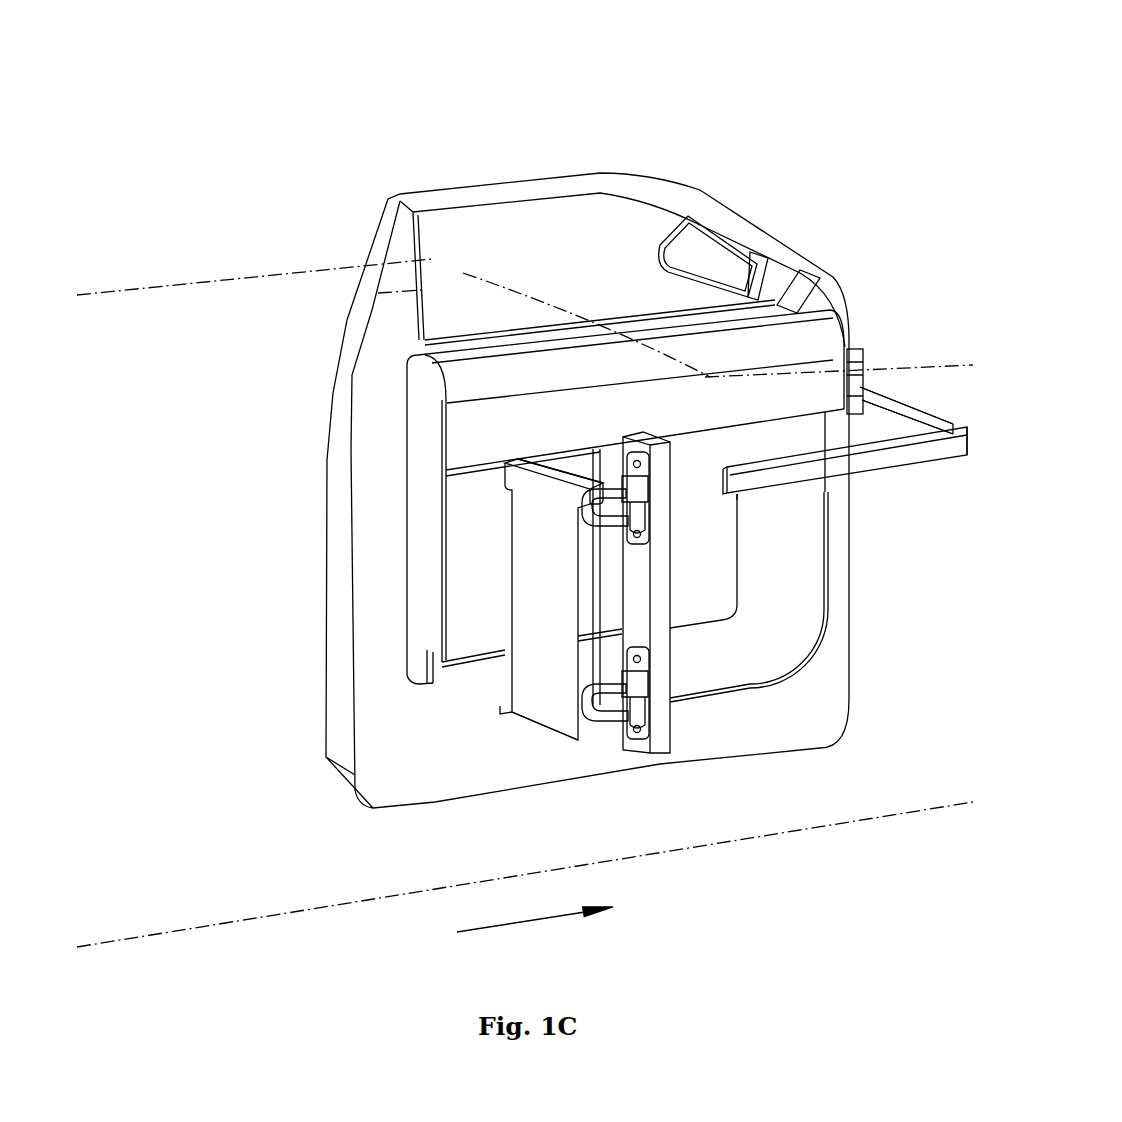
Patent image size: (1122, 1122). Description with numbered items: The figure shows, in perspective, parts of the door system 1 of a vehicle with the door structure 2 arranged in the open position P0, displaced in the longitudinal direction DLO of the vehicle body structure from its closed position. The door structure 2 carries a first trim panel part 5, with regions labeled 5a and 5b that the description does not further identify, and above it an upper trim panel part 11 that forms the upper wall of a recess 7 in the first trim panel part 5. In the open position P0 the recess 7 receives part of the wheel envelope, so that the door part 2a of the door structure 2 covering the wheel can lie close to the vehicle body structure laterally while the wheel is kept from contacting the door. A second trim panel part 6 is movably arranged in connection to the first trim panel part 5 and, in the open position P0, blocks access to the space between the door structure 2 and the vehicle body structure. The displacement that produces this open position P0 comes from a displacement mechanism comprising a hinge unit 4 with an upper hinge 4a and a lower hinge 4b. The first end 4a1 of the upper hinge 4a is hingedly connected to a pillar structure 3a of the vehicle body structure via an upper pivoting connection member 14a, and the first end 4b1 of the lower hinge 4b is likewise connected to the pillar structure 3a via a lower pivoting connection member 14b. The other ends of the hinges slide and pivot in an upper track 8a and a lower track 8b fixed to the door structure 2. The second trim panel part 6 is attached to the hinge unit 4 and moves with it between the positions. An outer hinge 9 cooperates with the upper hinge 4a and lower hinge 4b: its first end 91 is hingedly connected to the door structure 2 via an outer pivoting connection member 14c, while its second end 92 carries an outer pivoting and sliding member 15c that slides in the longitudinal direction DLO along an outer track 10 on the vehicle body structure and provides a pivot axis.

The door system 1 is at (685, 95).
The open position P0 is at (772, 108).
The door structure 2 is at (400, 242).
The door part 2a is at (853, 729).
The pillar structure 3a is at (660, 647).
The hinge unit 4 is at (680, 719).
The upper hinge 4a is at (652, 530).
The first end of the upper hinge 4a1 is at (652, 520).
The lower hinge 4b is at (605, 745).
The first end of the lower hinge 4b1 is at (645, 745).
The first trim panel part 5 is at (480, 556).
The box side panel 5a is at (801, 538).
The box front edge 5b is at (429, 592).
The second trim panel part 6 is at (533, 670).
The recess 7 is at (801, 566).
The upper track 8a is at (592, 458).
The lower track 8b is at (472, 680).
The outer hinge 9 is at (892, 390).
The first end of the outer hinge 91 is at (877, 357).
The second end of the outer hinge 92 is at (937, 410).
The outer track 10 is at (872, 456).
The upper trim panel part 11 is at (420, 428).
The upper pivoting connection member 14a is at (657, 507).
The lower pivoting connection member 14b is at (670, 700).
The outer pivoting connection member 14c is at (857, 350).
The outer pivoting and sliding member 15c is at (963, 392).
The longitudinal direction DLO is at (545, 930).